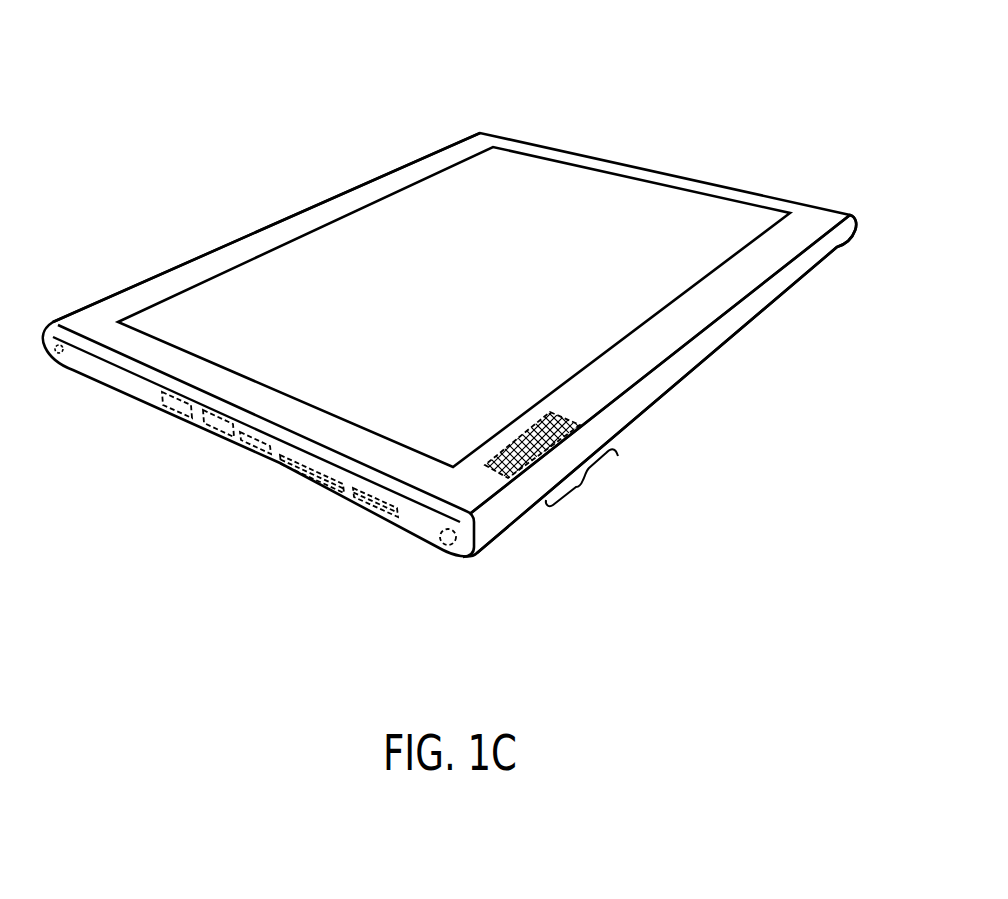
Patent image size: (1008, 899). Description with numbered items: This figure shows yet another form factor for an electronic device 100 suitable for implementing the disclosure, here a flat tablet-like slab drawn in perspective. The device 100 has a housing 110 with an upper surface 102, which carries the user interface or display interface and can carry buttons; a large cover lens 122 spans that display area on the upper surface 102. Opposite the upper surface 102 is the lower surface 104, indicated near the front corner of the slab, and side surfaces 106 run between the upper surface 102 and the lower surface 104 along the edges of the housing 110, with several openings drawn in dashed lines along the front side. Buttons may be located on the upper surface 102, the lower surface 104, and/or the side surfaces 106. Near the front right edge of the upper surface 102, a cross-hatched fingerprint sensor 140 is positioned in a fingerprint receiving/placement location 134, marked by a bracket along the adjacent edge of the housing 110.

The electronic device 100 is at (648, 82).
The upper surface 102 is at (258, 242).
The lower surface 104 is at (458, 558).
The side surfaces 106 is at (247, 455).
The housing 110 is at (788, 277).
The cover lens 122 is at (702, 210).
The fingerprint receiving/placement location 134 is at (584, 477).
The fingerprint sensor 140 is at (582, 423).